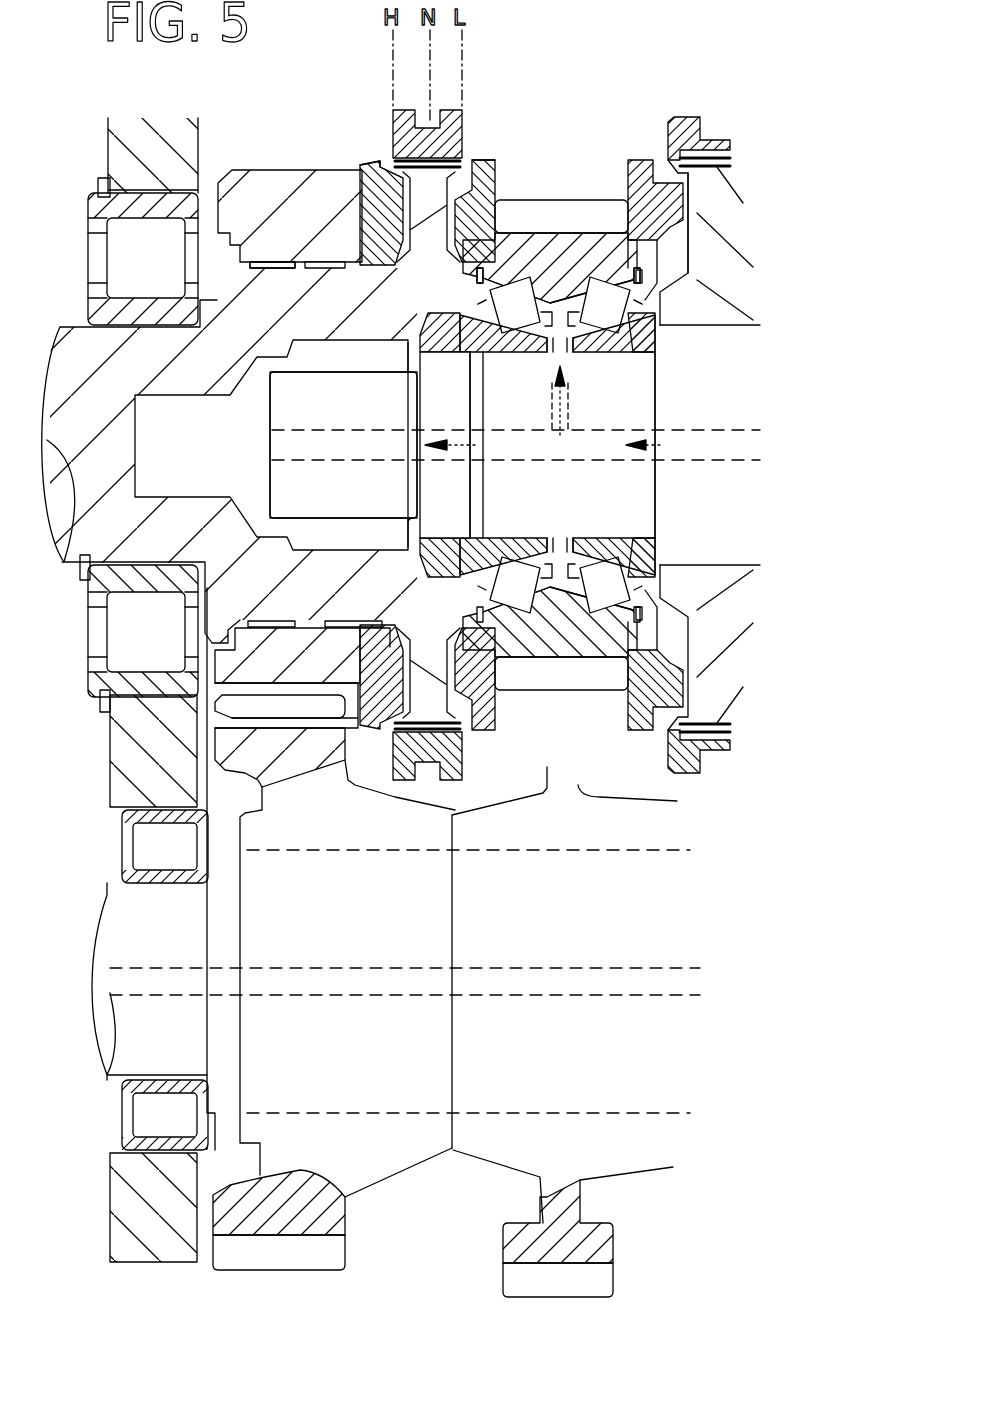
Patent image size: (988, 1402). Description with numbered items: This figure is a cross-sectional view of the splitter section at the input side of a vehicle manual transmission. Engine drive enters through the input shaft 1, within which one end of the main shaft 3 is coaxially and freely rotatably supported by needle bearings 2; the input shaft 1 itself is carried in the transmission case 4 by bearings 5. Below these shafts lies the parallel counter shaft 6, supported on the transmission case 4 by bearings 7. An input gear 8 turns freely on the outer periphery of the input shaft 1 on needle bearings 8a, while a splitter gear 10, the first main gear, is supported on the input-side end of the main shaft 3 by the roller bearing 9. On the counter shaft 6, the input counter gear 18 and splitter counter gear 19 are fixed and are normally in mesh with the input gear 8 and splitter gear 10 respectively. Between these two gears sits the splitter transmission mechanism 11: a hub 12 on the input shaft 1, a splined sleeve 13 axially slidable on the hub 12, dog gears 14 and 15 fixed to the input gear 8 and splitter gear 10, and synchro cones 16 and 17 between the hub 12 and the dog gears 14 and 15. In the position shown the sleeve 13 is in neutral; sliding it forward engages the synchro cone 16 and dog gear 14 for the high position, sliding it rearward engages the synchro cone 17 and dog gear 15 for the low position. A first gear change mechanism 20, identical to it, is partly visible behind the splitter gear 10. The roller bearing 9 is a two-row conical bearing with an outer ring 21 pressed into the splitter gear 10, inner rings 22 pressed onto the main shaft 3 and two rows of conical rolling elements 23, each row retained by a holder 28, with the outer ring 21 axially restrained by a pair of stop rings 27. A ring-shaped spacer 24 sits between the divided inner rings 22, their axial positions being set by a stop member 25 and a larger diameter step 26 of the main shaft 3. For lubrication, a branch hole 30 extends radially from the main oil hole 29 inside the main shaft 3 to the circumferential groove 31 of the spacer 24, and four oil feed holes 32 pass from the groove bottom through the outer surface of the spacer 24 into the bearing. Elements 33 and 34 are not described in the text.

The input shaft 1 is at (82, 395).
The needle bearings 2 is at (343, 348).
The main shaft 3 is at (730, 416).
The transmission case 4 is at (128, 746).
The bearings 5 is at (125, 620).
The counter shaft 6 is at (117, 933).
The bearings 7 is at (152, 842).
The input gear 8 is at (258, 172).
The needle bearings 8a is at (275, 268).
The roller bearing 9 is at (665, 312).
The splitter gear 10 is at (600, 200).
The splitter transmission mechanism 11 is at (372, 90).
The hub 12 is at (420, 210).
The sleeve 13 is at (448, 110).
The dog gear 14 is at (345, 163).
The dog gear 15 is at (490, 158).
The synchro cone 16 is at (388, 158).
The synchro cone 17 is at (470, 158).
The input counter gear 18 is at (290, 1256).
The splitter counter gear 19 is at (555, 1278).
The first gear change mechanism 20 is at (730, 110).
The outer ring 21 is at (585, 270).
The inner ring 22 is at (512, 350).
The rolling elements 23 is at (468, 378).
The spacer 24 is at (578, 356).
The stop member 25 is at (400, 375).
The larger diameter step 26 is at (658, 348).
The stop rings 27 is at (478, 280).
The holder 28 is at (478, 300).
The main oil hole 29 is at (710, 462).
The branch hole 30 is at (553, 440).
The circumferential groove 31 is at (552, 388).
The oil feed holes 32 is at (555, 292).
The flange 33 is at (685, 118).
The seal member 34 is at (648, 168).